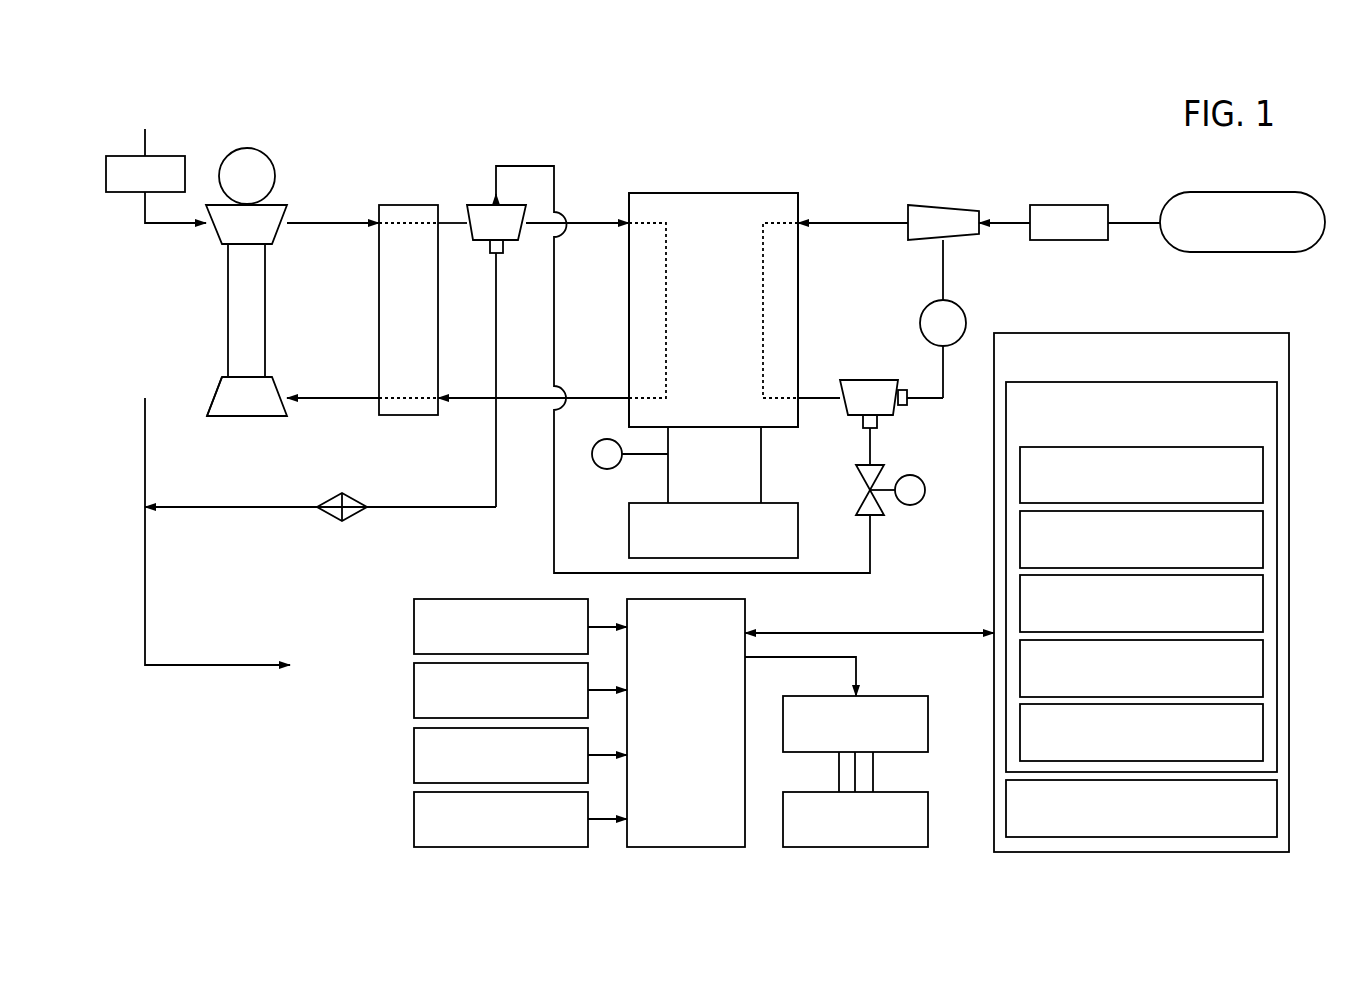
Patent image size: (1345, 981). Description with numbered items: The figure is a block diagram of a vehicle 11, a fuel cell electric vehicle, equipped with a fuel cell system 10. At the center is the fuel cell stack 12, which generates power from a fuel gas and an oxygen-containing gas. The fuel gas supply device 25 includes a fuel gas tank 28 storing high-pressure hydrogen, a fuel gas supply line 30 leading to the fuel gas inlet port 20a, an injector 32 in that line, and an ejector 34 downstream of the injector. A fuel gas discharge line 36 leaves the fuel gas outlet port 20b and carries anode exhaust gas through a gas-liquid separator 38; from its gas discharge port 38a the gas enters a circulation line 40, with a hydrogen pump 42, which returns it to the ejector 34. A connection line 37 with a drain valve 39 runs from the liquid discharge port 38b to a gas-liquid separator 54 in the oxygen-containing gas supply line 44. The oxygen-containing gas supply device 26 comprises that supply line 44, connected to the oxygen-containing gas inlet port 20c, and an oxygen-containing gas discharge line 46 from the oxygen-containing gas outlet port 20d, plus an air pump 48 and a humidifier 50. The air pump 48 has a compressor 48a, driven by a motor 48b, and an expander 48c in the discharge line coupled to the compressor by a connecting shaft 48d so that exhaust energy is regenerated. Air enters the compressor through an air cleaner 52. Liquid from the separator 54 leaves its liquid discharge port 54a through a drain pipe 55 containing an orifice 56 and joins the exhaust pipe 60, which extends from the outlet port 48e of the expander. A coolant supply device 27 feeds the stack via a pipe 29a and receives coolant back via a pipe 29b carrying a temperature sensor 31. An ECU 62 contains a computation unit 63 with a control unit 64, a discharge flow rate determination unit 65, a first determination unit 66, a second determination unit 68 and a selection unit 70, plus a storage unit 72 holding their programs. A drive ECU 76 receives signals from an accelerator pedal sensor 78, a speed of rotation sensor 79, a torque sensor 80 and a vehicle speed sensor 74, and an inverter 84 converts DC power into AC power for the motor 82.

The fuel cell system 10 is at (643, 150).
The vehicle 11 is at (1024, 119).
The fuel cell stack 12 is at (755, 191).
The fuel gas inlet port 20a is at (800, 222).
The fuel gas outlet port 20b is at (800, 400).
The oxygen-containing gas inlet port 20c is at (628, 222).
The oxygen-containing gas outlet port 20d is at (628, 397).
The fuel gas supply device 25 is at (1036, 180).
The oxygen-containing gas supply device 26 is at (333, 195).
The coolant supply device 27 is at (798, 535).
The fuel gas tank 28 is at (1240, 201).
The pipe 29a is at (762, 474).
The pipe 29b is at (667, 476).
The fuel gas supply line 30 is at (1135, 222).
The temperature sensor 31 is at (594, 441).
The injector 32 is at (1066, 230).
The ejector 34 is at (950, 214).
The fuel gas discharge line 36 is at (823, 396).
The connection line 37 is at (554, 545).
The gas-liquid separator 38 is at (913, 402).
The gas discharge port 38a is at (907, 400).
The liquid discharge port 38b is at (878, 424).
The drain valve 39 is at (862, 506).
The circulation line 40 is at (940, 282).
The hydrogen pump 42 is at (950, 318).
The oxygen-containing gas supply line 44 is at (338, 228).
The oxygen-containing gas discharge line 46 is at (299, 396).
The air pump 48 is at (239, 282).
The compressor 48a is at (276, 208).
The motor 48b is at (251, 155).
The expander 48c is at (228, 390).
The connecting shaft 48d is at (240, 302).
The outlet port 48e is at (208, 400).
The humidifier 50 is at (407, 212).
The air cleaner 52 is at (162, 163).
The gas-liquid separator 54 is at (492, 337).
The liquid discharge port 54a is at (491, 246).
The drain pipe 55 is at (270, 505).
The orifice 56 is at (350, 495).
The exhaust pipe 60 is at (233, 662).
The ECU 62 is at (1167, 332).
The computation unit 63 is at (1278, 407).
The control unit 64 is at (1263, 472).
The discharge flow rate determination unit 65 is at (1263, 536).
The first determination unit 66 is at (1263, 600).
The second determination unit 68 is at (1263, 665).
The selection unit 70 is at (1263, 730).
The storage unit 72 is at (1277, 806).
The vehicle speed sensor 74 is at (414, 804).
The drive ECU 76 is at (745, 612).
The accelerator pedal sensor 78 is at (414, 613).
The speed of rotation sensor 79 is at (414, 677).
The torque sensor 80 is at (414, 740).
The motor 82 is at (928, 810).
The inverter 84 is at (928, 715).